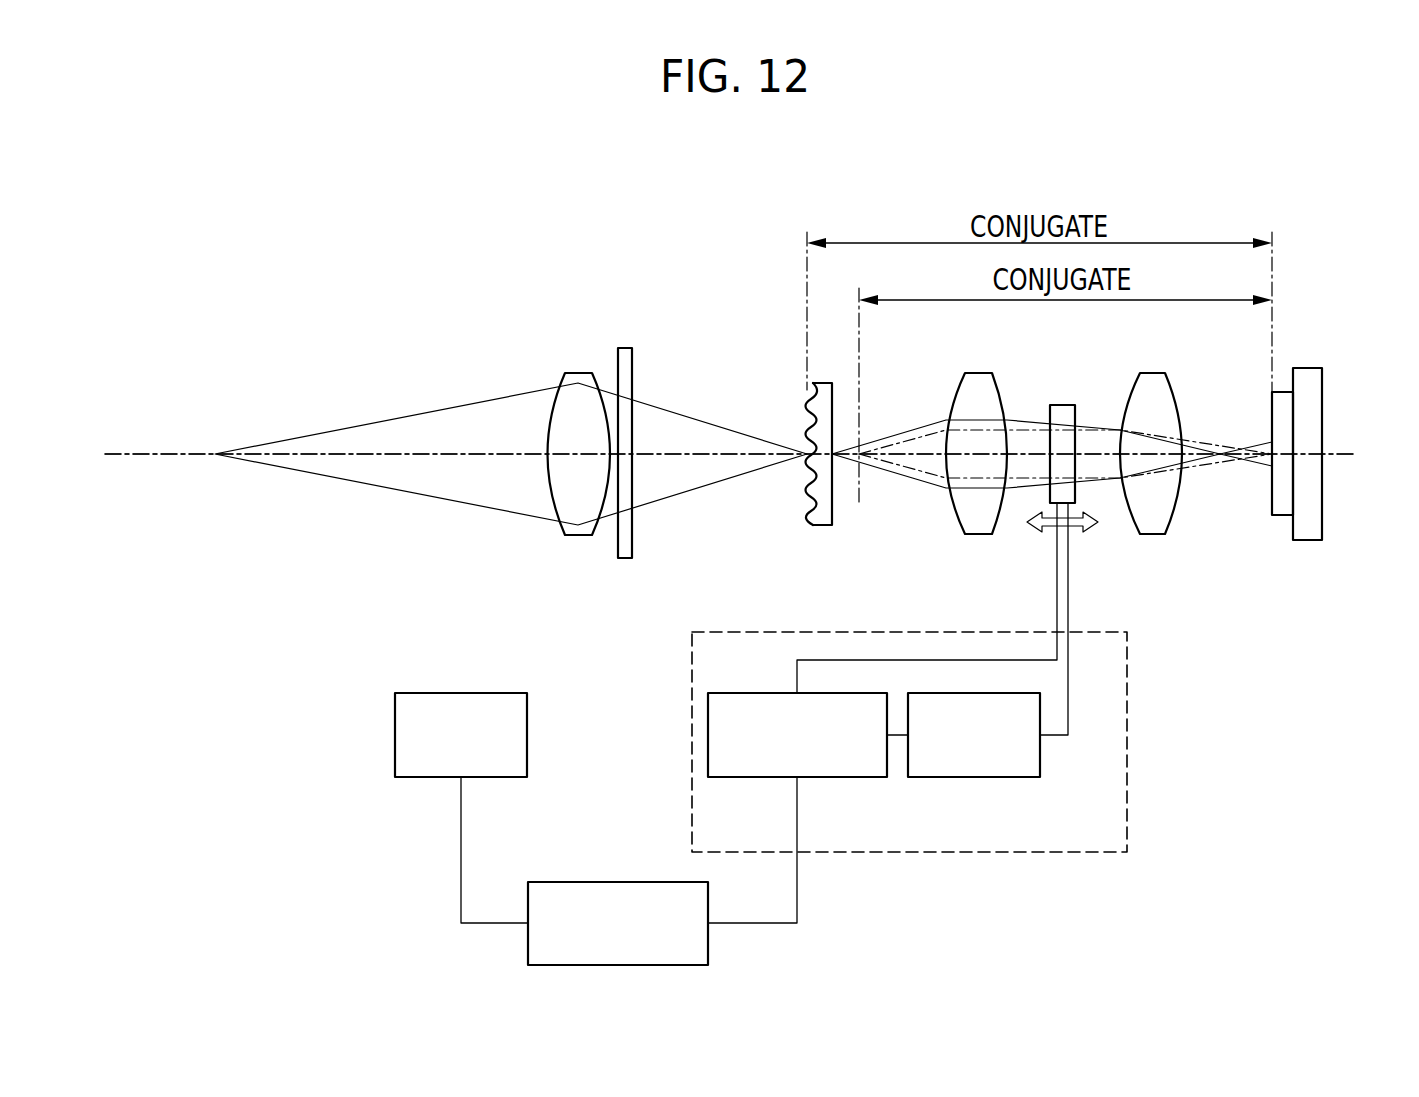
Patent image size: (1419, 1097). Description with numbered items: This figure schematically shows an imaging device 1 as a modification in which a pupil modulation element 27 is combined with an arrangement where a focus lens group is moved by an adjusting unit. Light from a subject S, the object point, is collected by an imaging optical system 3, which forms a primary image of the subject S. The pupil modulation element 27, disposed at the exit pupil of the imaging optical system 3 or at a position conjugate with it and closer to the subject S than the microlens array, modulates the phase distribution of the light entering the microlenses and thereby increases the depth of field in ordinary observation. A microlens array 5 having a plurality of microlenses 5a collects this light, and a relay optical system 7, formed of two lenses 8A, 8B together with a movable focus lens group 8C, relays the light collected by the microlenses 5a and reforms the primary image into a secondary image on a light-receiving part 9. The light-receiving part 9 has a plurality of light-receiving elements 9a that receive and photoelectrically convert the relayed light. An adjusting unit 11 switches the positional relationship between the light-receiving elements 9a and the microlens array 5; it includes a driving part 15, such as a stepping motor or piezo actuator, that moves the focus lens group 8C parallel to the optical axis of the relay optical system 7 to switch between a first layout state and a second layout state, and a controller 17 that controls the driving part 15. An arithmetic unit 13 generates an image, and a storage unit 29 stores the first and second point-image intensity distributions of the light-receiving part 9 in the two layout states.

The imaging device 1 is at (403, 170).
The subject S is at (214, 457).
The imaging optical system 3 is at (577, 538).
The pupil modulation element 27 is at (625, 560).
The microlens array 5 is at (776, 490).
The microlens 5a is at (810, 418).
The relay optical system 7 is at (1035, 473).
The lens 8A is at (975, 536).
The lens 8B is at (1150, 536).
The focus lens group 8C is at (1060, 404).
The light-receiving part 9 is at (1298, 416).
The light-receiving element 9a is at (1270, 421).
The adjusting unit 11 is at (909, 735).
The arithmetic unit 13 is at (608, 880).
The driving part 15 is at (930, 779).
The controller 17 is at (849, 779).
The storage unit 29 is at (413, 779).